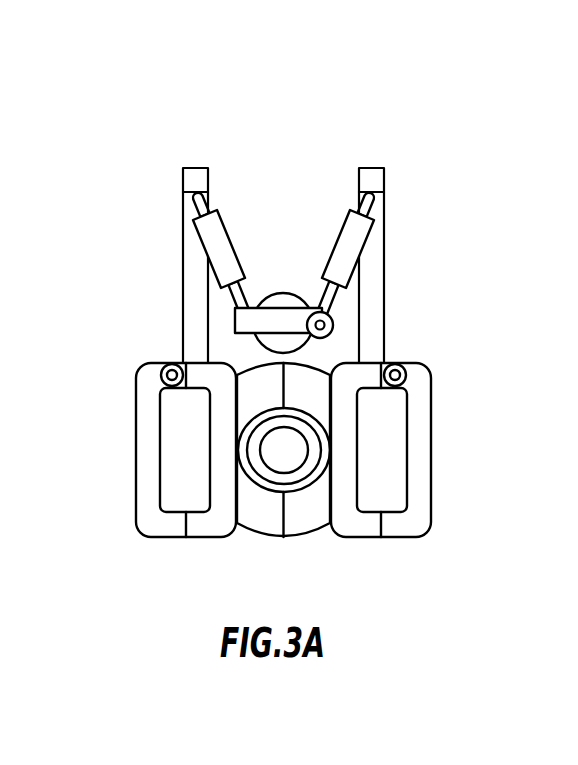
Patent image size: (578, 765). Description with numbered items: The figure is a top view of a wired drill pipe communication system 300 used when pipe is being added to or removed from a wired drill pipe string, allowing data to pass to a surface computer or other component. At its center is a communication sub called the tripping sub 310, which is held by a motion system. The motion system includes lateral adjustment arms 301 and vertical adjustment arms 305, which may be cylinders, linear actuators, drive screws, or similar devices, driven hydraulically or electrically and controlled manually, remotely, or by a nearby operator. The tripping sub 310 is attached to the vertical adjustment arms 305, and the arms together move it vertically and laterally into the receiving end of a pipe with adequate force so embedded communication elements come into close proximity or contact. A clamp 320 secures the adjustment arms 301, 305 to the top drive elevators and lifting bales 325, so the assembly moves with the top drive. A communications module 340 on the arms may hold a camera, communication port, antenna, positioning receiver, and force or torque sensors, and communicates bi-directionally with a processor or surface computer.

The wired drill pipe communication system 300 is at (417, 102).
The lateral adjustment arms 301 is at (230, 240).
The vertical adjustment arms 305 is at (385, 207).
The tripping sub 310 is at (303, 290).
The communications module 340 is at (333, 323).
The clamp 320 is at (432, 410).
The top drive elevators and lifting bales 325 is at (385, 448).